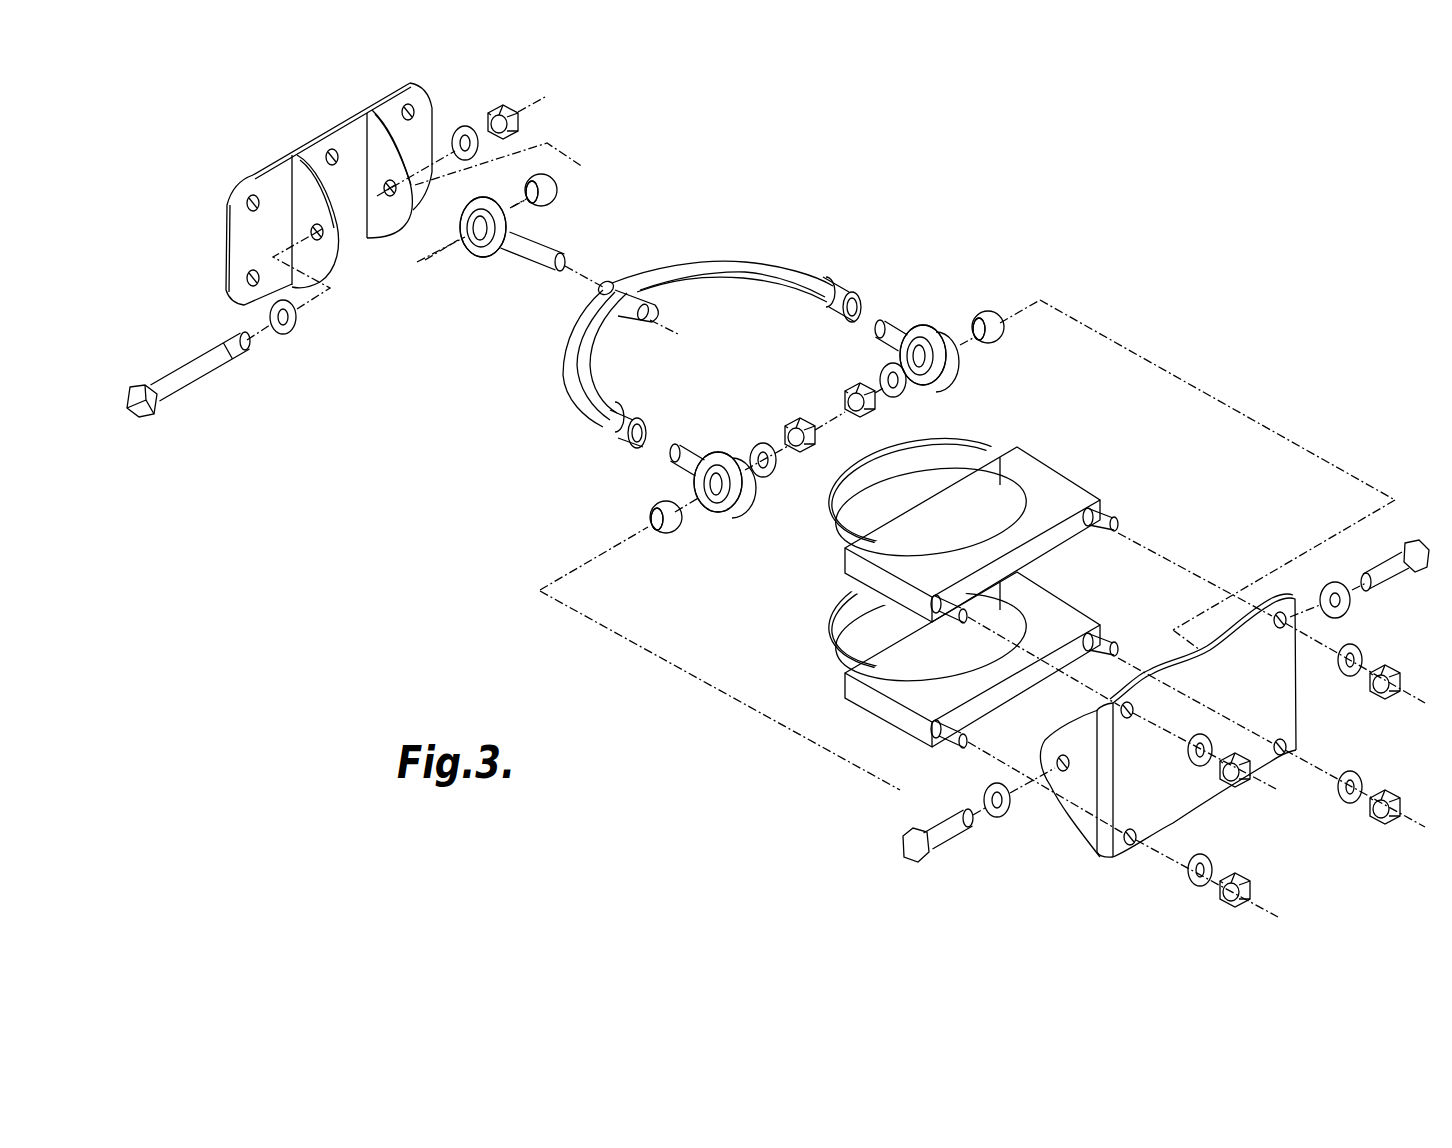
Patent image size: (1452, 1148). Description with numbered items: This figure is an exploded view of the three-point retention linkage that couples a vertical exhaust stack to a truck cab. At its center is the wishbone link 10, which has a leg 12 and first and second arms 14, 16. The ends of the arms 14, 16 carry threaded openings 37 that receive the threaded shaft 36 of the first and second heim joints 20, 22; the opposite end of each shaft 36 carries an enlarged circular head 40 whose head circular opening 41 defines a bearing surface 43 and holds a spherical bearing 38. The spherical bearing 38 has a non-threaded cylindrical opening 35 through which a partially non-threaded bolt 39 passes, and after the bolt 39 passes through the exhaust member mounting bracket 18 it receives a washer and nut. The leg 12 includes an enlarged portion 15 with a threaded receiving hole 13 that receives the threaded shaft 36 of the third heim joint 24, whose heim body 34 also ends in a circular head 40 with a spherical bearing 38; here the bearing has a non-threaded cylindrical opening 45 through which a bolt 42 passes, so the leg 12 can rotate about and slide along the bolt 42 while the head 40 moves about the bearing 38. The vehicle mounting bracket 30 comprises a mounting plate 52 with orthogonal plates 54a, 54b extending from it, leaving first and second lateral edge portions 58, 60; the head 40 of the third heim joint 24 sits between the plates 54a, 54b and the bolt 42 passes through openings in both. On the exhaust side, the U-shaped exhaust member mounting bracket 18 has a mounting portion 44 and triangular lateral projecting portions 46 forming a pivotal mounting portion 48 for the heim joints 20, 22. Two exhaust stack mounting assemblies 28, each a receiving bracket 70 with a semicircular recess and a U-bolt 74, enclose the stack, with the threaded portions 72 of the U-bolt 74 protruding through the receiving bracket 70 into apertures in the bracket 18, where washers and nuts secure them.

The wishbone link 10 is at (712, 321).
The leg 12 is at (648, 284).
The threaded receiving hole 13 is at (650, 323).
The first arm 14 is at (570, 385).
The enlarged portion 15 is at (658, 286).
The second arm 16 is at (735, 267).
The exhaust member mounting bracket 18 is at (1152, 744).
The first heim joint 20 is at (636, 498).
The second heim joint 22 is at (946, 328).
The third heim joint 24 is at (531, 274).
The exhaust stack mounting assembly 28 is at (963, 593).
The vehicle mounting bracket 30 is at (296, 137).
The heim body 34 is at (505, 262).
The cylindrical opening 35 is at (983, 345).
The threaded shaft 36 is at (550, 264).
The threaded openings 37 is at (863, 300).
The spherical bearing 38 is at (557, 191).
The bolt 39 is at (940, 845).
The enlarged circular head 40 is at (515, 218).
The head circular opening 41 is at (900, 390).
The bolt 42 is at (190, 360).
The bearing surface 43 is at (470, 262).
The mounting portion 44 is at (1282, 693).
The non-threaded cylindrical opening 45 is at (552, 218).
The lateral projecting portions 46 is at (1090, 820).
The pivotal mounting portion 48 is at (1043, 745).
The mounting plate 52 is at (347, 140).
The first orthogonal plate 54a is at (323, 253).
The second orthogonal plate 54b is at (393, 224).
The first lateral edge portion 58 is at (237, 238).
The second lateral edge portion 60 is at (430, 125).
The receiving bracket 70 is at (1057, 480).
The threaded portions 72 is at (1108, 514).
The U-bolt 74 is at (953, 457).